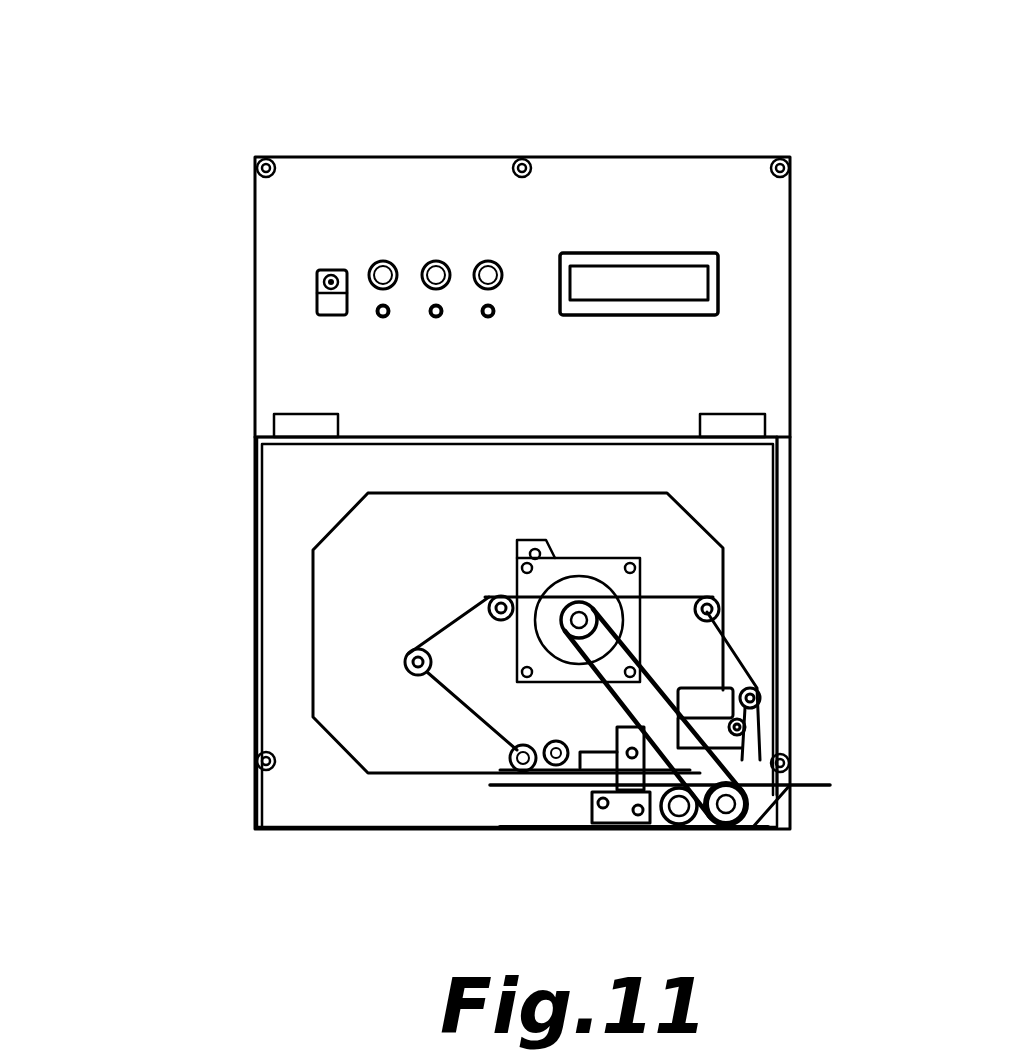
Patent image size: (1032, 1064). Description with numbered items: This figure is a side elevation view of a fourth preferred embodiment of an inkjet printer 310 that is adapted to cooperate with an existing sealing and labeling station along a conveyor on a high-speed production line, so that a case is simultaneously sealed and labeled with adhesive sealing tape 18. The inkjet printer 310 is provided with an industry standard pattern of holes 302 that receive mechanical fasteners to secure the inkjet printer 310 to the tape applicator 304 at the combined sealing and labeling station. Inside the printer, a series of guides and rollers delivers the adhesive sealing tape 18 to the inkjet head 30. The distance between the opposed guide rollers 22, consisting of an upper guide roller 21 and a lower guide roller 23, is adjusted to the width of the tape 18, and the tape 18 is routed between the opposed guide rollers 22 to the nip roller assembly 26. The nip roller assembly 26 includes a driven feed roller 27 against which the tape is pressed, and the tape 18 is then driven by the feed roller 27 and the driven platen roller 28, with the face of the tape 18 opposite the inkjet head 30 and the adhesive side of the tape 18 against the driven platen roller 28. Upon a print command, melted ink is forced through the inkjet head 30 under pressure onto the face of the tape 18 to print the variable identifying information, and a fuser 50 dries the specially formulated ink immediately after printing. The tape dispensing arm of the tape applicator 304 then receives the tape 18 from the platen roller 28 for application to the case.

The inkjet printer 310 is at (188, 280).
The holes 302 is at (746, 157).
The tape applicator 304 is at (533, 383).
The opposed guide rollers 22 is at (497, 751).
The lower guide roller 23 is at (510, 757).
The upper guide roller 21 is at (556, 741).
The adhesive sealing tape 18 is at (515, 790).
The nip roller assembly 26 is at (545, 797).
The feed roller 27 is at (668, 826).
The driven platen roller 28 is at (720, 830).
The inkjet head 30 is at (700, 688).
The fuser 50 is at (762, 670).